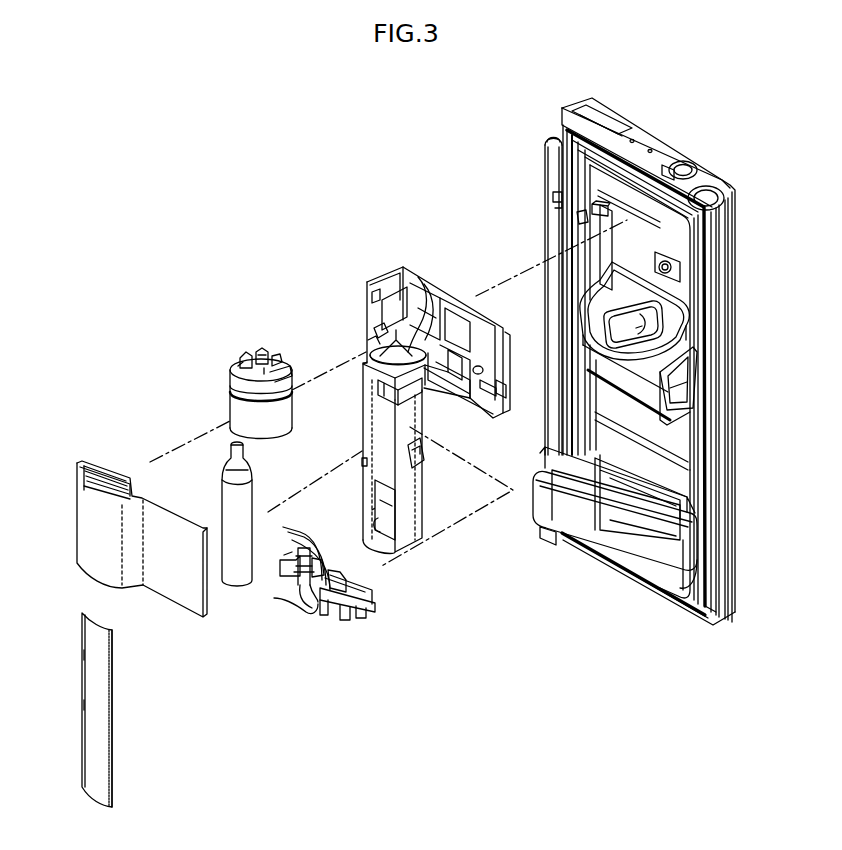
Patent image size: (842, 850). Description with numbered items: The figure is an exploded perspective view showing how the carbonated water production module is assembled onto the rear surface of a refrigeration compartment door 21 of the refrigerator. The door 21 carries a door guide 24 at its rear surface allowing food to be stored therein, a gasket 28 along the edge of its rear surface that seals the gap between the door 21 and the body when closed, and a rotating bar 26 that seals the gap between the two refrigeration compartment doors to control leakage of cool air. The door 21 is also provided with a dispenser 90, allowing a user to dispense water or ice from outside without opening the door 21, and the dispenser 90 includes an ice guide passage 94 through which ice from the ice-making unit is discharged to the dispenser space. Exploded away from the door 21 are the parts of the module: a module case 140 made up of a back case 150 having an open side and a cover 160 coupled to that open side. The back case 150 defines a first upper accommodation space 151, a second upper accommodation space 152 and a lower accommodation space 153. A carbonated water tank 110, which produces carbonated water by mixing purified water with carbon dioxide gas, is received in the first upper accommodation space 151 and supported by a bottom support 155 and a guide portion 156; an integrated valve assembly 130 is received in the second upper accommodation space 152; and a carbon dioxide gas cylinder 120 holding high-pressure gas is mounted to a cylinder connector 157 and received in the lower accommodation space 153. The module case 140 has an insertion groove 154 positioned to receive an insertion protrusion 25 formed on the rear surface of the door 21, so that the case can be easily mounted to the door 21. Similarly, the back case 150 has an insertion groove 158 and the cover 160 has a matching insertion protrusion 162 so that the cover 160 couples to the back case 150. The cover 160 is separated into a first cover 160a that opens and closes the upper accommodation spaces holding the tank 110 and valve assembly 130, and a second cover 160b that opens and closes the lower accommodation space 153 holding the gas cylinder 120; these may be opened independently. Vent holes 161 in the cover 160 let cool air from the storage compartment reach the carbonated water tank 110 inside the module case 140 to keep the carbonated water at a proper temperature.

The refrigeration compartment door 21 is at (672, 116).
The door guide 24 is at (607, 543).
The insertion protrusion 25 is at (578, 217).
The rotating bar 26 is at (547, 165).
The gasket 28 is at (708, 411).
The dispenser 90 is at (676, 342).
The ice guide passage 94 is at (655, 328).
The carbonated water tank 110 is at (250, 328).
The carbon dioxide gas cylinder 120 is at (240, 573).
The integrated valve assembly 130 is at (384, 635).
The module case 140 is at (276, 497).
The back case 150 is at (397, 252).
The first upper accommodation space 151 is at (412, 310).
The second upper accommodation space 152 is at (457, 347).
The lower accommodation space 153 is at (374, 440).
The insertion groove 154 is at (497, 397).
The bottom support 155 is at (377, 333).
The guide portion 156 is at (370, 357).
The cylinder connector 157 is at (383, 392).
The insertion groove 158 is at (362, 463).
The cover 160 is at (203, 640).
The first cover 160a is at (85, 542).
The second cover 160b is at (85, 683).
The vent holes 161 is at (108, 470).
The insertion protrusion 162 is at (112, 688).